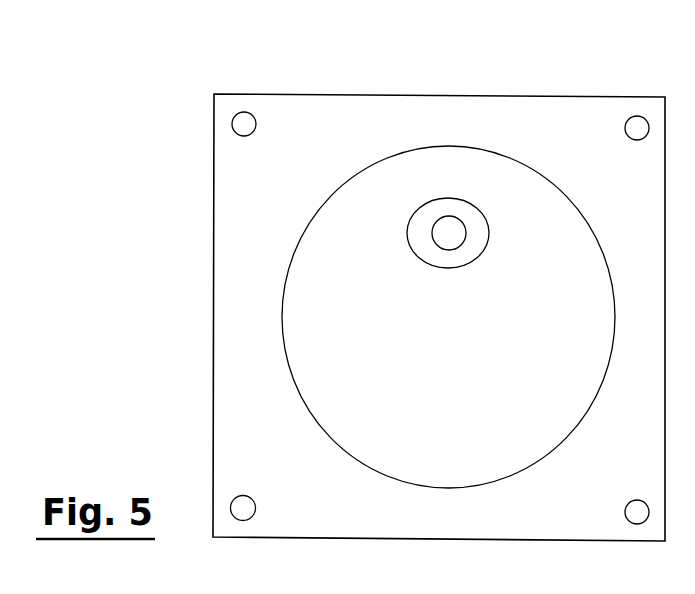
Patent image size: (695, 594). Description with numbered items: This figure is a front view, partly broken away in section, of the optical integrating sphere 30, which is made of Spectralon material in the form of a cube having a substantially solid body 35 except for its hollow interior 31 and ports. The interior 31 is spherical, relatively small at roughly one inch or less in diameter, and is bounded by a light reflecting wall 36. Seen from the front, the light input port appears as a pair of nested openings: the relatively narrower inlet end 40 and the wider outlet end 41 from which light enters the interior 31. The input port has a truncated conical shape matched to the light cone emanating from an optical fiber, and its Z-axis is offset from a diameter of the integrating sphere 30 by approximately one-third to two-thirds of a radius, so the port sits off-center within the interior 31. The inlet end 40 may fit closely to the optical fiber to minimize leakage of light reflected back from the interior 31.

The optical integrating sphere 30 is at (213, 170).
The interior 31 is at (441, 303).
The body 35 is at (298, 120).
The light reflecting wall 36 is at (292, 265).
The inlet end 40 is at (463, 217).
The outlet end 41 is at (480, 213).